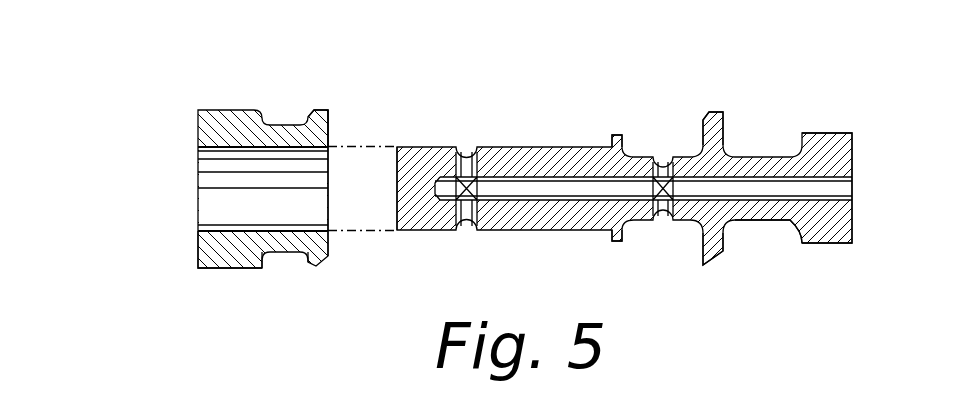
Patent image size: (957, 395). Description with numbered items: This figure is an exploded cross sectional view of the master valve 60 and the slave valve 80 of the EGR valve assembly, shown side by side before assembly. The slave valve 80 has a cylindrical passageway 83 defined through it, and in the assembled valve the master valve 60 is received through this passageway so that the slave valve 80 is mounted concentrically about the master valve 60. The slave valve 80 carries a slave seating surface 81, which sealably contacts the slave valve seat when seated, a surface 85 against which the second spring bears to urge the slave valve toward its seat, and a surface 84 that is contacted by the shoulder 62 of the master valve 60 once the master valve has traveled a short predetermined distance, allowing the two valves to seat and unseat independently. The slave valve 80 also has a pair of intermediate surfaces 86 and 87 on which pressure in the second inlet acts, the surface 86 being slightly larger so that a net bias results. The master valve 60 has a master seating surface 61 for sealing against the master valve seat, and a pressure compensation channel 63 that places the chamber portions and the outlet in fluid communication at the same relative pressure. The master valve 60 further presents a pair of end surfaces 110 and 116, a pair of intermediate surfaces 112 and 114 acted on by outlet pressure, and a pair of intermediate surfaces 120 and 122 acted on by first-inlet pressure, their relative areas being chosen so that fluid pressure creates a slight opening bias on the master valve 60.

The master valve 60 is at (831, 121).
The master seating surface 61 is at (720, 113).
The shoulder 62 is at (620, 133).
The pressure compensation channel 63 is at (470, 149).
The slave valve 80 is at (226, 104).
The slave seating surface 81 is at (318, 112).
The cylindrical passageway 83 is at (200, 227).
The surface 84 is at (330, 131).
The surface 85 is at (198, 255).
The intermediate surface 86 is at (263, 268).
The intermediate surface 87 is at (306, 268).
The end surface 110 is at (397, 228).
The intermediate surface 112 is at (623, 242).
The intermediate surface 114 is at (706, 266).
The end surface 116 is at (855, 231).
The intermediate surface 120 is at (726, 249).
The intermediate surface 122 is at (795, 228).